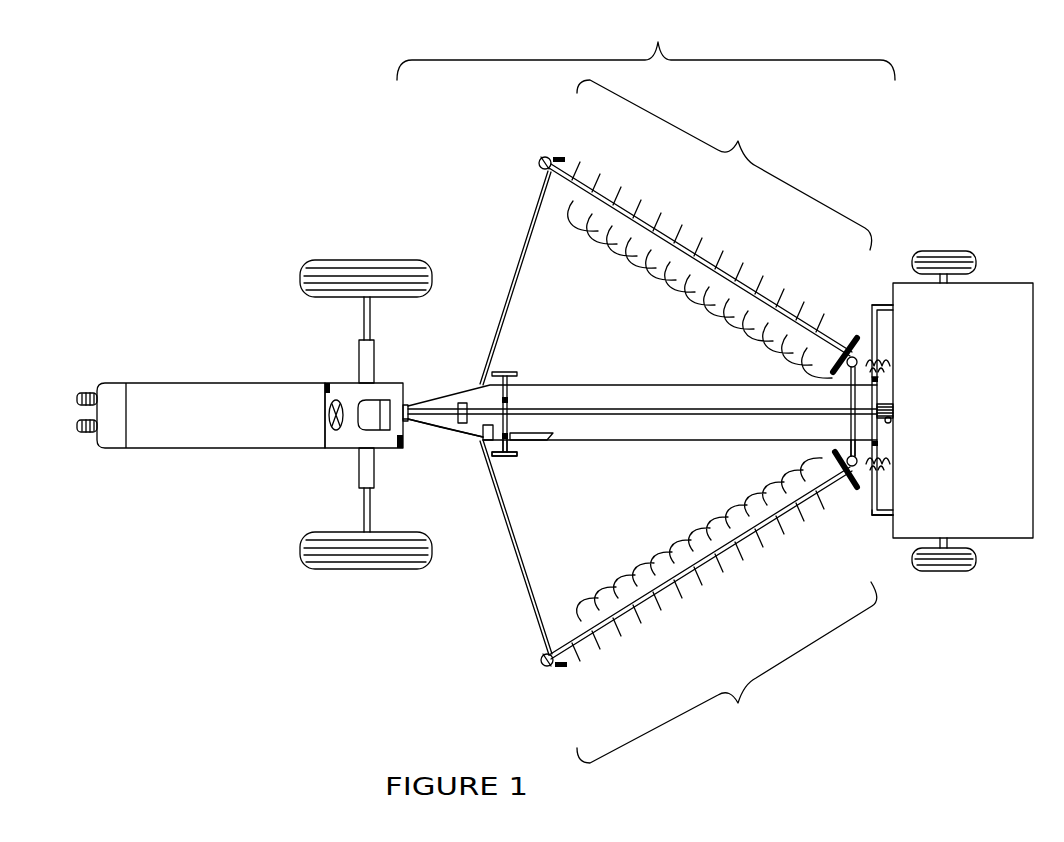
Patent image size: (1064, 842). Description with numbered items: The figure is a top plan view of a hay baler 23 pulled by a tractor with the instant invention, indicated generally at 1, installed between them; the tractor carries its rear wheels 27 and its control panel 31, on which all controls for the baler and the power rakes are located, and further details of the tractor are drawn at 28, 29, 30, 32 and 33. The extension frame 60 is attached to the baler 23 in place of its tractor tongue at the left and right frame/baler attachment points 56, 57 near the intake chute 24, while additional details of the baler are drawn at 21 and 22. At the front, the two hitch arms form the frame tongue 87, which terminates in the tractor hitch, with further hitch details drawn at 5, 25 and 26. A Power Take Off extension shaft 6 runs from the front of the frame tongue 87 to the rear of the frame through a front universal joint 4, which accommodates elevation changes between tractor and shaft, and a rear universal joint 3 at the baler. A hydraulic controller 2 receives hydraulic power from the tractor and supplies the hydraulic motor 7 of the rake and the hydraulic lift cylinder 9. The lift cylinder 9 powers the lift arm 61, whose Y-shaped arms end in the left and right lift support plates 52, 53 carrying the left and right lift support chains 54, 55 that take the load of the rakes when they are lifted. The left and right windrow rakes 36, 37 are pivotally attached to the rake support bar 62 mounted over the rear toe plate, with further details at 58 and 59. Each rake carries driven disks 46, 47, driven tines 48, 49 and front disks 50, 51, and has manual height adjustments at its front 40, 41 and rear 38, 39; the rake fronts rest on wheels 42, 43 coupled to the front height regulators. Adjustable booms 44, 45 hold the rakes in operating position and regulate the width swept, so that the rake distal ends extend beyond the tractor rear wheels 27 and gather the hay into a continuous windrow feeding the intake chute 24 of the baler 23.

The mower assembly 1 is at (646, 50).
The hydraulic controller 2 is at (484, 432).
The rear universal joint 3 is at (891, 422).
The front universal joint 4 is at (461, 403).
The lower hitch link 5 is at (412, 422).
The Power Take Off extension shaft 6 is at (872, 440).
The hydraulic motor 7 is at (855, 340).
The hydraulic lift cylinder 9 is at (535, 440).
The trailer frame connection 21 is at (878, 517).
The trailer wheel 22 is at (940, 251).
The baler 23 is at (953, 418).
The intake chute 24 is at (879, 380).
The hitch pin 25 is at (405, 421).
The upper hitch link 26 is at (406, 406).
The rear wheels 27 is at (336, 262).
The drawbar 28 is at (399, 447).
The front hitch 29 is at (70, 396).
The tractor 30 is at (184, 423).
The tractor control panel 31 is at (329, 383).
The steering wheel 32 is at (335, 430).
The seat 33 is at (362, 427).
The left windrow rake 36 is at (727, 672).
The right windrow rake 37 is at (724, 165).
The rear height adjustment 38 is at (873, 488).
The rear height adjustment 39 is at (874, 305).
The front height adjustment 40 is at (541, 664).
The front height adjustment 41 is at (539, 163).
The wheel 42 is at (560, 667).
The wheel 43 is at (558, 157).
The adjustable boom 44 is at (516, 548).
The adjustable boom 45 is at (511, 290).
The driven disk 46 is at (834, 455).
The driven disk 47 is at (833, 370).
The driven tines 48 is at (748, 500).
The driven tines 49 is at (674, 278).
The front disk 50 is at (583, 610).
The front disk 51 is at (570, 207).
The left lift support plate 52 is at (544, 468).
The right lift support plate 53 is at (545, 394).
The left lift support chain 54 is at (513, 458).
The right lift support chain 55 is at (512, 373).
The left frame/baler attachment point 56 is at (878, 443).
The right frame/baler attachment point 57 is at (880, 366).
The lower link 58 is at (854, 467).
The upper link 59 is at (853, 357).
The extension frame 60 is at (712, 440).
The lift arm 61 is at (509, 400).
The rake support bar 62 is at (850, 443).
The frame tongue 87 is at (450, 429).